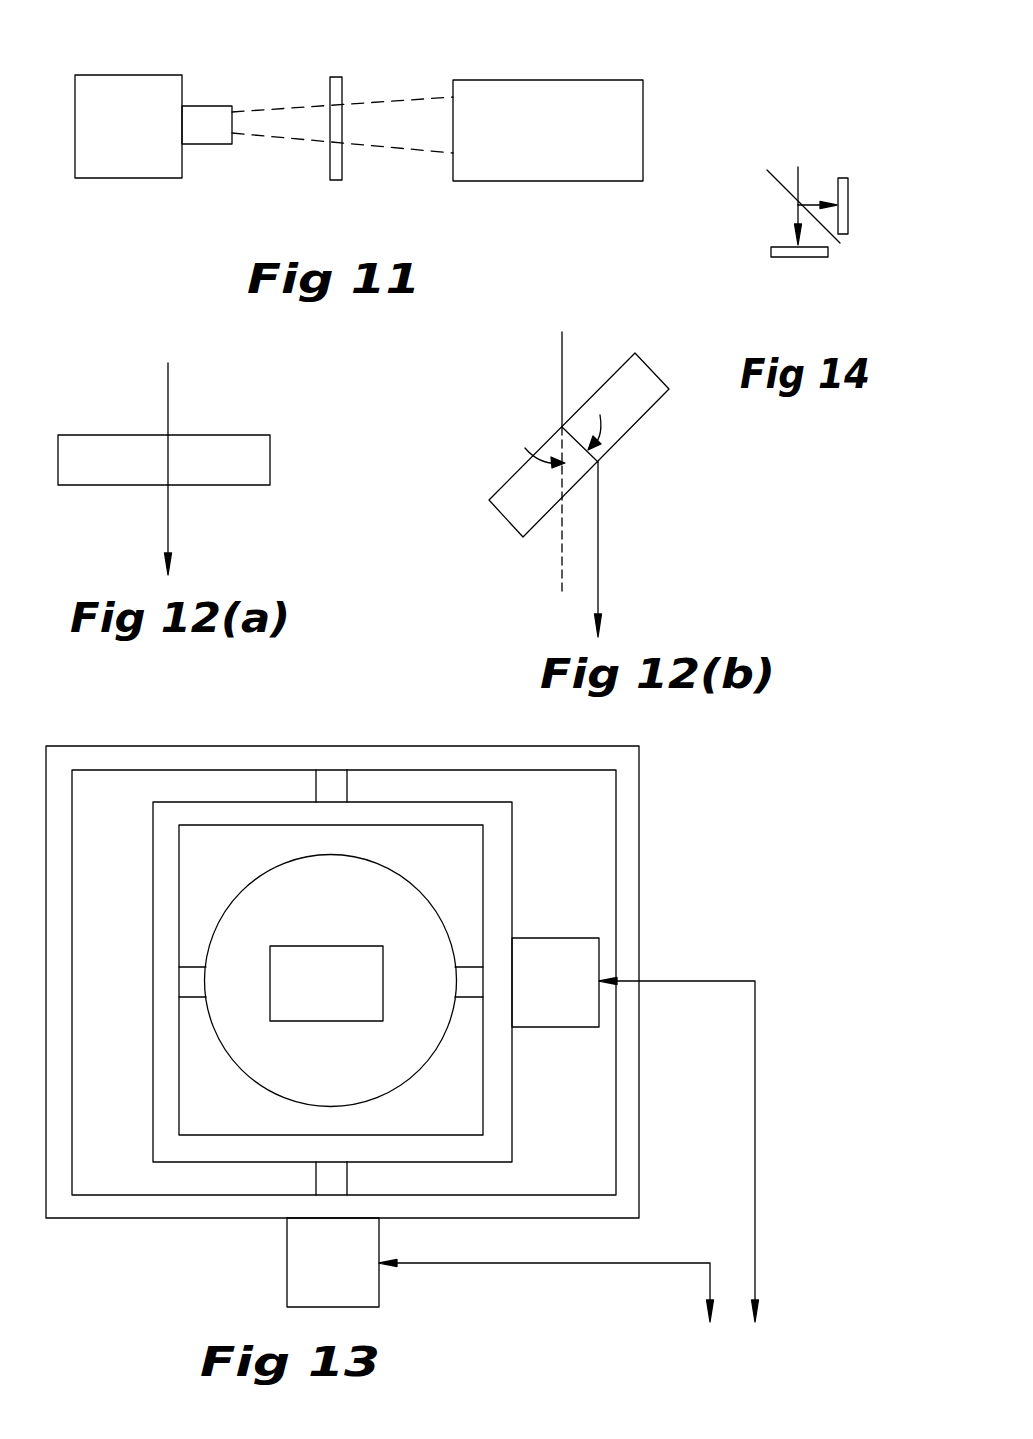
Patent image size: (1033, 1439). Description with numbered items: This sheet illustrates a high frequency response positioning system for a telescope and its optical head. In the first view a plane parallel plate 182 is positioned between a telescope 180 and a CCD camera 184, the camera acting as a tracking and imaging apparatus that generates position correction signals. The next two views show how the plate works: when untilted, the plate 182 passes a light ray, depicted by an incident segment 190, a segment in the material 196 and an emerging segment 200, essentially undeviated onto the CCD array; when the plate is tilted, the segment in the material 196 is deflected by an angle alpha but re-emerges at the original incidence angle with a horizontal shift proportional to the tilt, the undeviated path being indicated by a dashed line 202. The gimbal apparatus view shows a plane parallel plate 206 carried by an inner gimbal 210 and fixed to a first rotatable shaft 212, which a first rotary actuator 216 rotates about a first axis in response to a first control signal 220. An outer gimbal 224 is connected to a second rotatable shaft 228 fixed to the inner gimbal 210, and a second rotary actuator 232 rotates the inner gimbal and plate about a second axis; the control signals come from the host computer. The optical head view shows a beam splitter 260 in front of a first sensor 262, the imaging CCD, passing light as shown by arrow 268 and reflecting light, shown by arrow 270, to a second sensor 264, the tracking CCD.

In FIG. 11, the telescope 180 is at (503, 80).
In FIG. 11, the plane parallel plate 182 is at (335, 77).
In FIG. 12a, the plane parallel plate 182 is at (270, 455).
In FIG. 12b, the plane parallel plate 182 is at (653, 367).
In FIG. 11, the CCD camera 184 is at (130, 75).
In FIG. 12a, the light ray segment 190 is at (168, 402).
In FIG. 12b, the light ray segment 190 is at (562, 380).
In FIG. 12a, the ray segment in the material 196 is at (167, 468).
In FIG. 12b, the ray segment in the material 196 is at (607, 453).
In FIG. 12a, the light ray segment 200 is at (173, 575).
In FIG. 12b, the light ray segment 200 is at (598, 593).
In FIG. 12b, the undeviated beam path 202 is at (582, 520).
In FIG. 13, the plane parallel plate 206 is at (320, 962).
In FIG. 13, the inner gimbal 210 is at (497, 899).
In FIG. 13, the first rotatable shaft 212 is at (470, 998).
In FIG. 13, the first rotary actuator 216 is at (575, 950).
In FIG. 13, the first control signal 220 is at (755, 1076).
In FIG. 13, the outer gimbal 224 is at (631, 789).
In FIG. 13, the second rotatable shaft 228 is at (332, 785).
In FIG. 13, the second rotary actuator 232 is at (297, 1256).
In FIG. 14, the beam splitter 260 is at (773, 181).
In FIG. 14, the first sensor 262 is at (798, 170).
In FIG. 14, the second sensor 264 is at (843, 236).
In FIG. 14, the arrow 268 is at (796, 216).
In FIG. 14, the arrow 270 is at (812, 202).